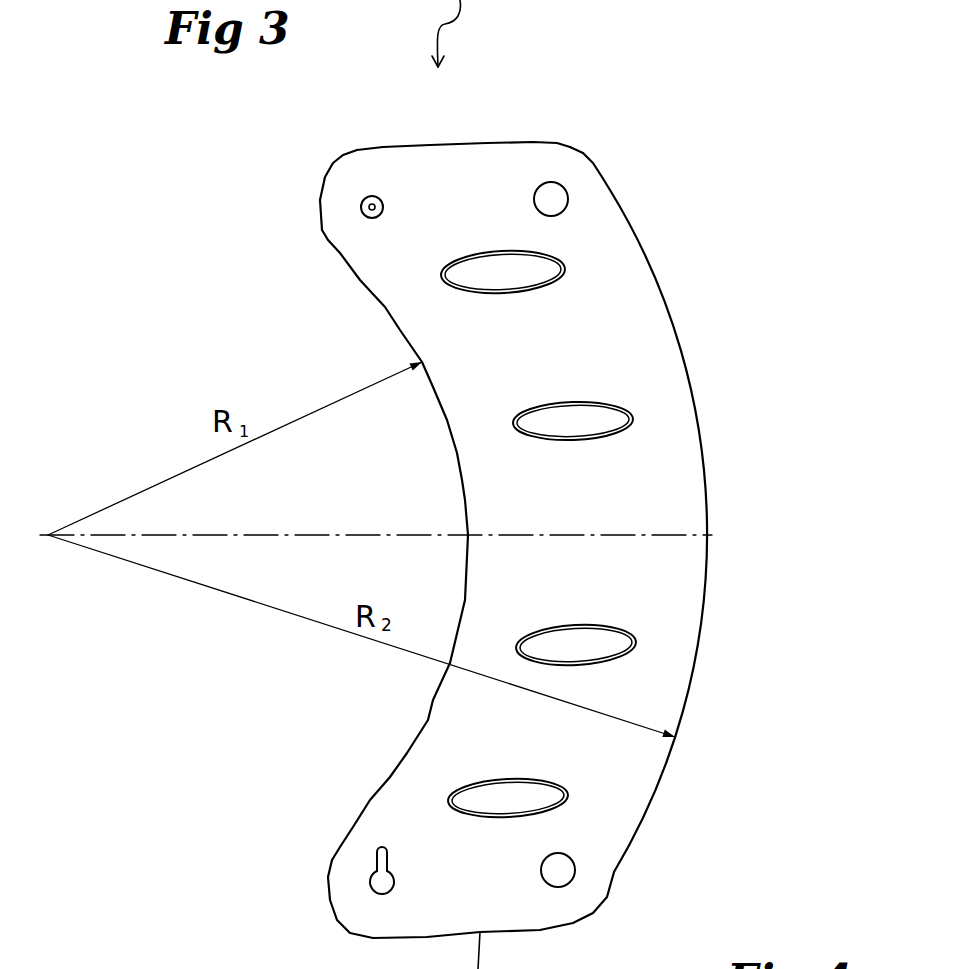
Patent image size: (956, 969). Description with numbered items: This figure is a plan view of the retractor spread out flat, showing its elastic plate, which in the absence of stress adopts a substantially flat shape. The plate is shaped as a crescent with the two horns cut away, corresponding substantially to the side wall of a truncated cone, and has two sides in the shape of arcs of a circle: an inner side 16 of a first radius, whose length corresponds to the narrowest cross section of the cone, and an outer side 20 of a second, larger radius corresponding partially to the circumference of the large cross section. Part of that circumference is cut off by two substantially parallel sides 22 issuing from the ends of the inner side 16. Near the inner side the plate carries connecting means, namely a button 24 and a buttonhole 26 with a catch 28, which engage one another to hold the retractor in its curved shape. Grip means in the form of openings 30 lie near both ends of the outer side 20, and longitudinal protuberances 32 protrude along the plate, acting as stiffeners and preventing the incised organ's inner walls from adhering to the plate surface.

The inner side 16 is at (459, 463).
The outer side 20 is at (698, 430).
The substantially parallel sides 22 is at (483, 143).
The button 24 is at (366, 214).
The buttonhole 26 is at (368, 877).
The catch 28 is at (392, 857).
The openings 30 is at (565, 187).
The protuberances 32 is at (545, 287).